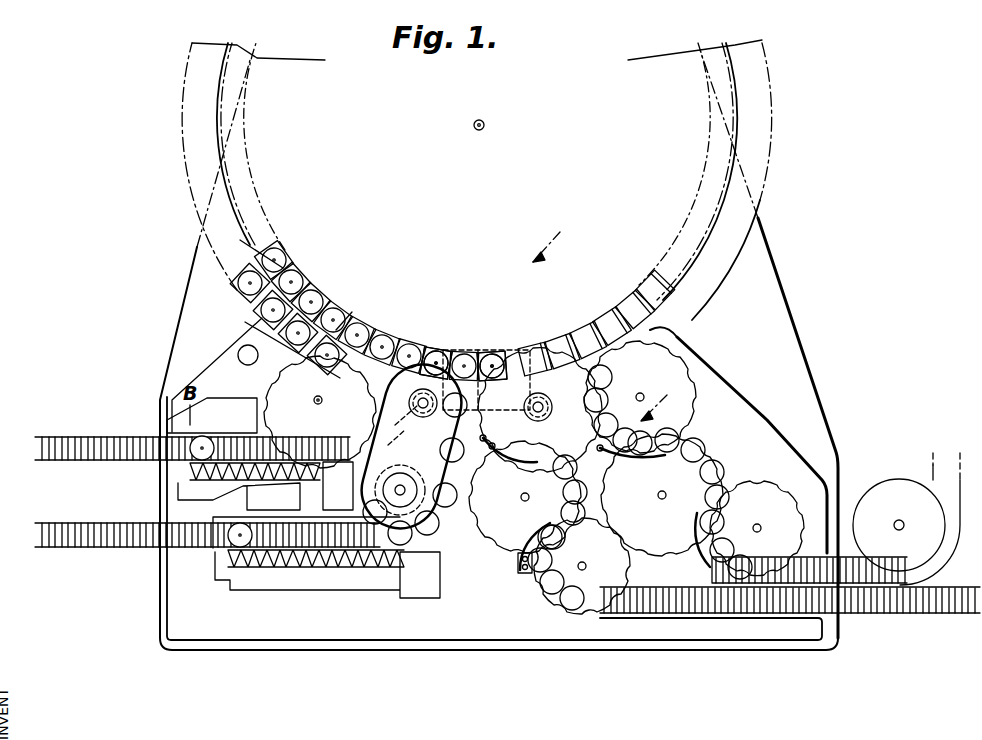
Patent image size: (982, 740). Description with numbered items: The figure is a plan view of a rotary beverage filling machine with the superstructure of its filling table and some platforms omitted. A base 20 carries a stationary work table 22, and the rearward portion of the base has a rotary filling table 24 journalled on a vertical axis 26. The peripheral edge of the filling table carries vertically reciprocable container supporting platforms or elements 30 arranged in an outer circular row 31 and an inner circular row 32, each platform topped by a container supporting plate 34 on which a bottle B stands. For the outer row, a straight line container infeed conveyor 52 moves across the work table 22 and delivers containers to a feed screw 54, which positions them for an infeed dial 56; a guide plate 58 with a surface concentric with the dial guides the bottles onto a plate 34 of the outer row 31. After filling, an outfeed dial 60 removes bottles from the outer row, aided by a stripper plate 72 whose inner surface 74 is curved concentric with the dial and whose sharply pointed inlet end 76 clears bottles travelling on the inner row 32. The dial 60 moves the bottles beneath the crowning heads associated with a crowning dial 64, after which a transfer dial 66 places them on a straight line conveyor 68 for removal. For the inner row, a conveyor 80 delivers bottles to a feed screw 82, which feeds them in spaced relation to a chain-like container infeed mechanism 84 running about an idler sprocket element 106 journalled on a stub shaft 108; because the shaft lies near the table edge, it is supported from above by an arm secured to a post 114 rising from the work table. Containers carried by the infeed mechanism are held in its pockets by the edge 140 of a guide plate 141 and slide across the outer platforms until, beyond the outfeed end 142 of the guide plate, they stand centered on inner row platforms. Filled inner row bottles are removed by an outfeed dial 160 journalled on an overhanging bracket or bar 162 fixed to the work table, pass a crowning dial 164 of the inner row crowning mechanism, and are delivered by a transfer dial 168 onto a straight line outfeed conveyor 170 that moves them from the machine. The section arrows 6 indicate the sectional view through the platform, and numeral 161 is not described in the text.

The section line 6 is at (600, 322).
The base 20 is at (760, 292).
The stationary work table 22 is at (763, 413).
The rotary filling table 24 is at (506, 181).
The vertical axis 26 is at (484, 130).
The container supporting platforms or elements 30 is at (577, 342).
The outer circular row 31 is at (650, 330).
The inner circular row 32 is at (628, 311).
The container supporting plate 34 is at (353, 325).
The container infeed conveyor 52 is at (95, 436).
The feed screw 54 is at (185, 478).
The infeed dial 56 is at (304, 412).
The guide plate 58 is at (352, 398).
The outfeed dial 60 is at (679, 399).
The crowning dial 64 is at (687, 480).
The transfer dial 66 is at (748, 507).
The straight line conveyor 68 is at (803, 555).
The stripper plate 72 is at (583, 385).
The inner surface 74 is at (636, 397).
The inlet end 76 is at (613, 373).
The conveyor 80 is at (88, 548).
The feed screw 82 is at (280, 568).
The container infeed mechanism 84 is at (420, 425).
The idler sprocket element 106 is at (404, 484).
The stub shaft 108 is at (430, 392).
The post 114 is at (355, 480).
The edge of guide plate 140 is at (528, 504).
The guide plate 141 is at (472, 365).
The outfeed end of guide plate 142 is at (430, 350).
The outfeed dial 160 is at (560, 378).
The carrier 161 is at (530, 395).
The overhanging bracket or bar 162 is at (523, 479).
The crowning dial 164 is at (510, 540).
The transfer dial 168 is at (597, 622).
The straight line outfeed conveyor 170 is at (686, 555).